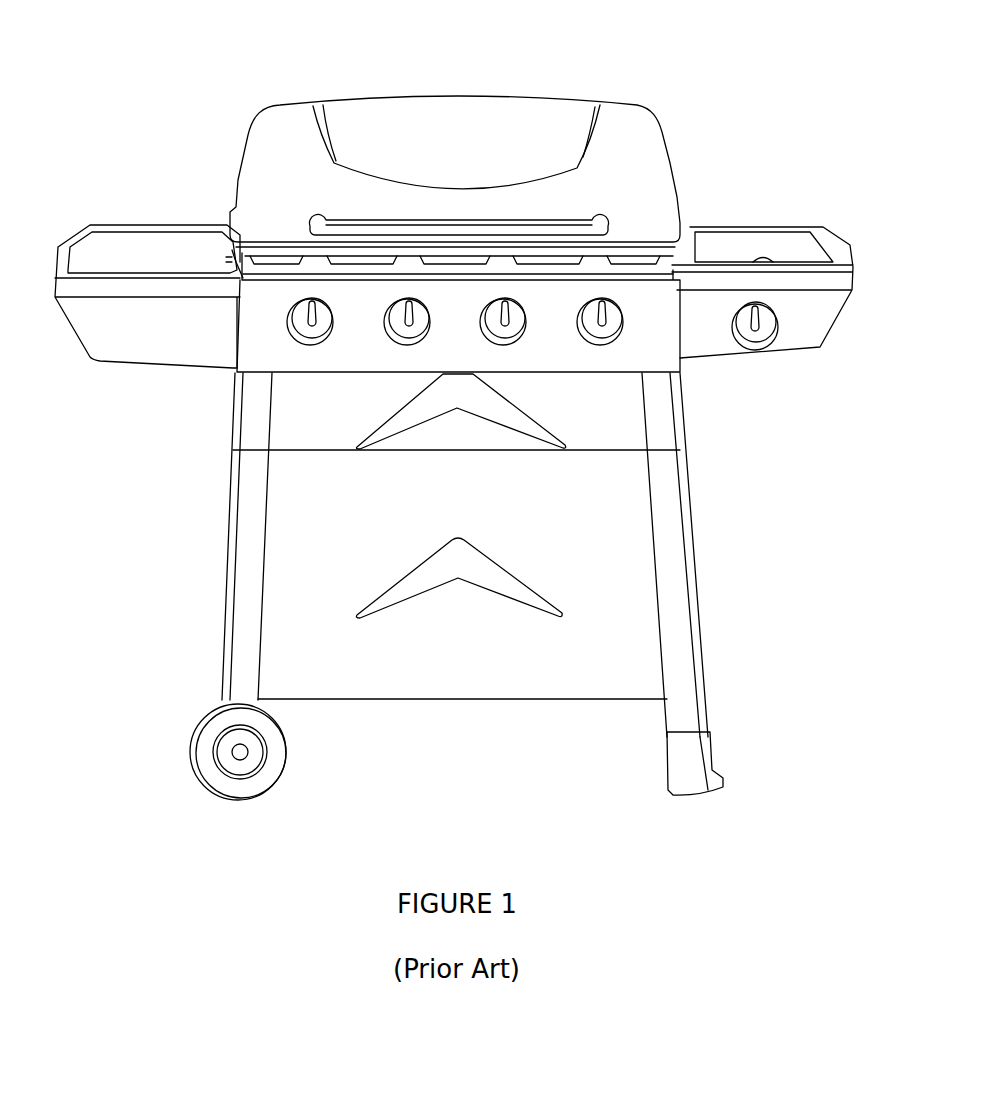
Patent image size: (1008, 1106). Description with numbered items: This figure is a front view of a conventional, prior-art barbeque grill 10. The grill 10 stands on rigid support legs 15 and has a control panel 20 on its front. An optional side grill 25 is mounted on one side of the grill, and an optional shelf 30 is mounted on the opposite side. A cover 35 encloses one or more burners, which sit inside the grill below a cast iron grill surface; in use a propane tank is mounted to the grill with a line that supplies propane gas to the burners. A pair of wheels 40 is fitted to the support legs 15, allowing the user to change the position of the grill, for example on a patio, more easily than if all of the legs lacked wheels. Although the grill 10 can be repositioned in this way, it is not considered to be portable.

The barbeque grill 10 is at (104, 142).
The rigid support legs 15 is at (673, 507).
The control panel 20 is at (645, 303).
The side grill 25 is at (767, 240).
The shelf 30 is at (114, 206).
The cover 35 is at (457, 112).
The wheels 40 is at (303, 778).